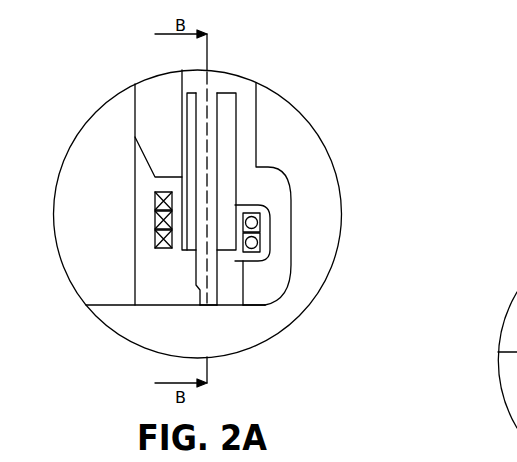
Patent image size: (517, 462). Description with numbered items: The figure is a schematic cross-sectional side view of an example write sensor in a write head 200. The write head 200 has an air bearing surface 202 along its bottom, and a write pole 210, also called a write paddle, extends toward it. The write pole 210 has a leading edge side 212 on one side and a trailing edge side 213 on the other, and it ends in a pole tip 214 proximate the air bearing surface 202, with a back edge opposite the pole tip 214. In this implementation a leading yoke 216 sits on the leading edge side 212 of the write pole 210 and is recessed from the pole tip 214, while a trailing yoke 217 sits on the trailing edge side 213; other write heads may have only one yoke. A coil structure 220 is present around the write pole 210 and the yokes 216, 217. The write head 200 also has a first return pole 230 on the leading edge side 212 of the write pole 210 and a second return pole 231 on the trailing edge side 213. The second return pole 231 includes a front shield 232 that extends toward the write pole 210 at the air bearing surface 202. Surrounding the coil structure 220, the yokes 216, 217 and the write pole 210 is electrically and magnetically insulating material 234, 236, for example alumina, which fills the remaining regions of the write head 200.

The write head 200 is at (398, 83).
The air bearing surface 202 is at (112, 305).
The write pole 210 is at (225, 192).
The leading edge side 212 is at (195, 295).
The trailing edge side 213 is at (217, 280).
The pole tip 214 is at (207, 305).
The leading yoke 216 is at (182, 123).
The trailing yoke 217 is at (237, 115).
The coil structure 220 is at (141, 225).
The first return pole 230 is at (133, 127).
The second return pole 231 is at (293, 200).
The front shield 232 is at (252, 305).
The insulating material 234 is at (152, 260).
The insulating material 236 is at (232, 263).